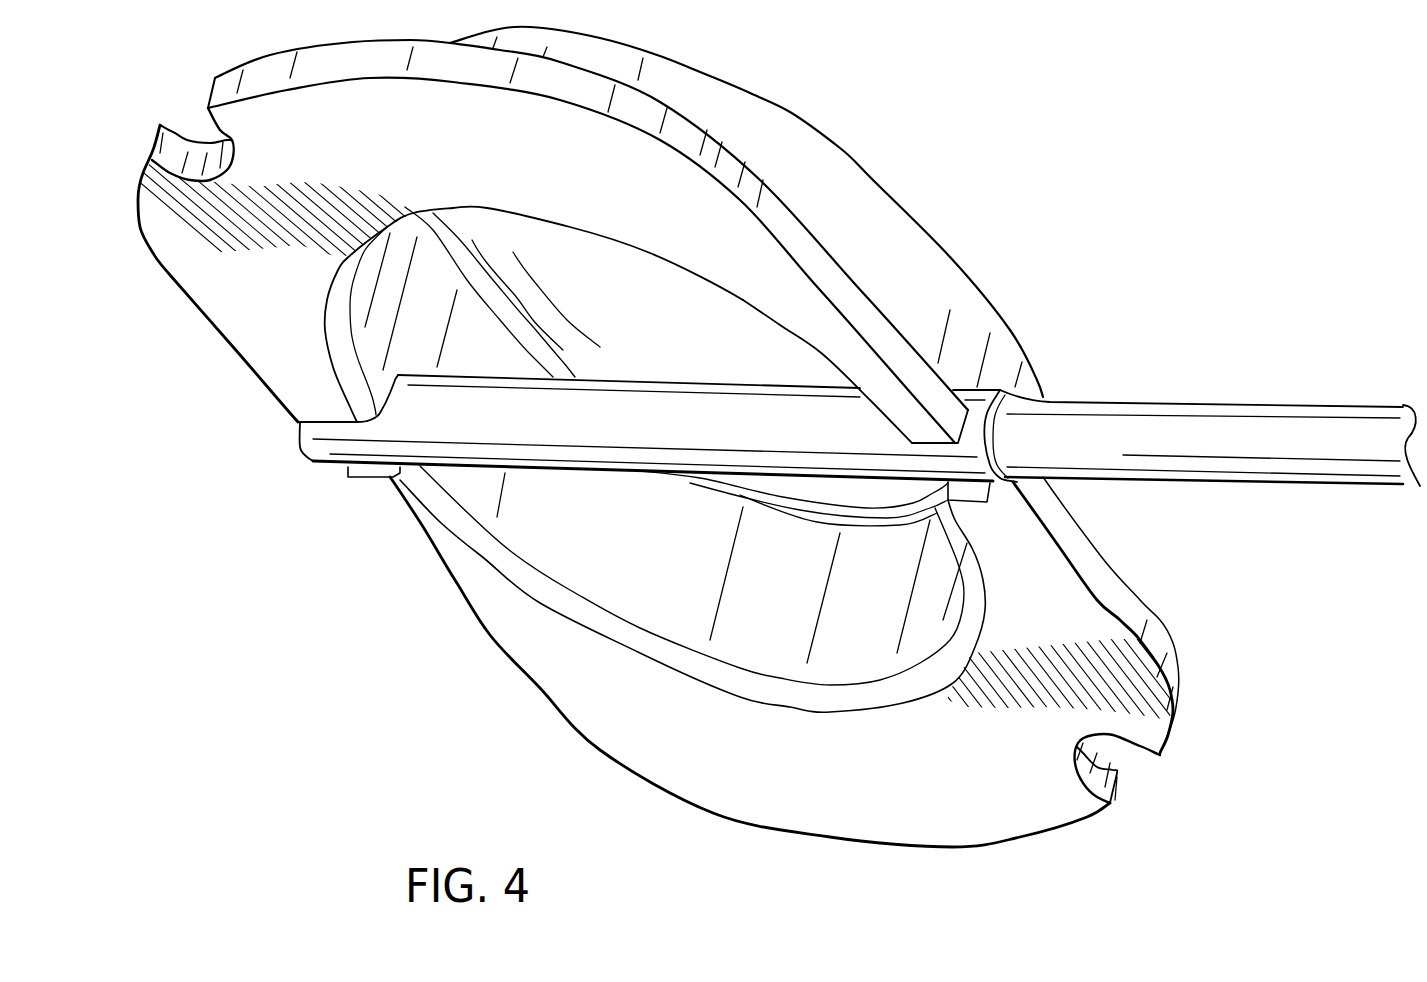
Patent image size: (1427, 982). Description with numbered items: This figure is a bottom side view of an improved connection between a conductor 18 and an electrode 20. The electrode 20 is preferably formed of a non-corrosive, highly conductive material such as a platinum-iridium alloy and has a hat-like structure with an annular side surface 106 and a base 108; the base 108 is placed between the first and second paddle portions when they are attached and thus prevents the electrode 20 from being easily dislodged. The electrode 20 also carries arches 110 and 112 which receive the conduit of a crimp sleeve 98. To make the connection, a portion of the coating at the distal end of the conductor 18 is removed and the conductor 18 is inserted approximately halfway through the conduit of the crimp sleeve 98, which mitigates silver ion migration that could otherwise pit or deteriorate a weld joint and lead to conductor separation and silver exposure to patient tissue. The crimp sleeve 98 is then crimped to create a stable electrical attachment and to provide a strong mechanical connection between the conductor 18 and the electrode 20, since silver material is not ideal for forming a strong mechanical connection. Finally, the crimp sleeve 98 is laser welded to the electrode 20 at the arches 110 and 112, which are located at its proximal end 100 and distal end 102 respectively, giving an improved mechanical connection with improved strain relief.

The conductor 18 is at (1337, 487).
The electrode 20 is at (817, 137).
The crimp sleeve 98 is at (650, 481).
The proximal end 100 is at (987, 502).
The distal end 102 is at (328, 448).
The annular side surface 106 is at (903, 270).
The base 108 is at (783, 803).
The arch 110 is at (947, 507).
The arch 112 is at (390, 468).